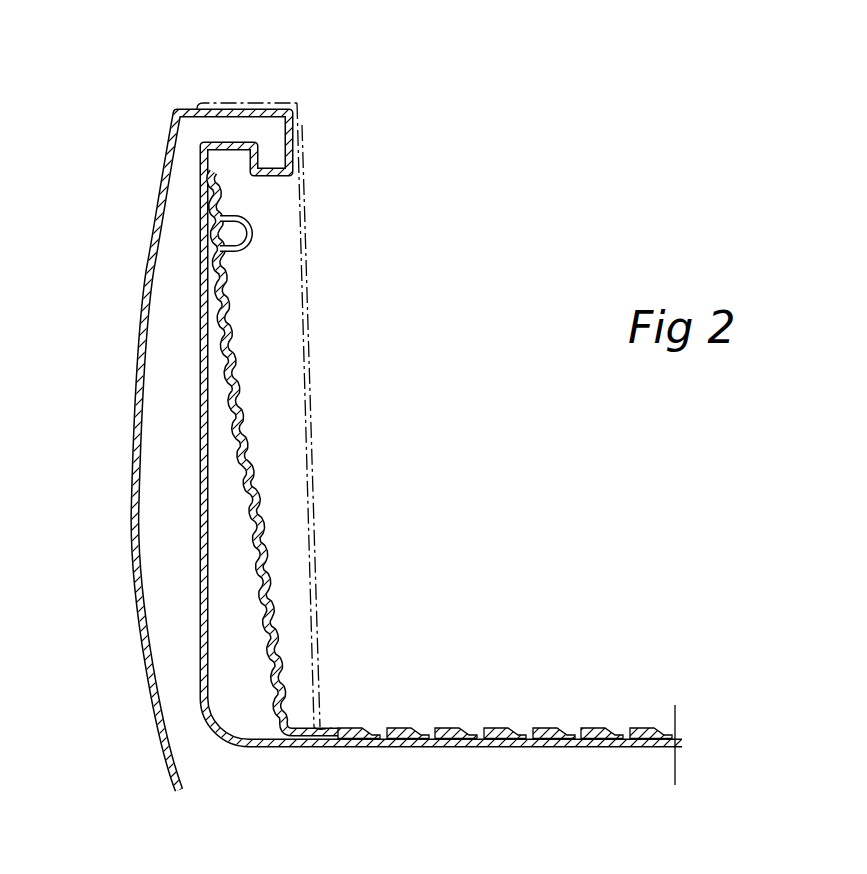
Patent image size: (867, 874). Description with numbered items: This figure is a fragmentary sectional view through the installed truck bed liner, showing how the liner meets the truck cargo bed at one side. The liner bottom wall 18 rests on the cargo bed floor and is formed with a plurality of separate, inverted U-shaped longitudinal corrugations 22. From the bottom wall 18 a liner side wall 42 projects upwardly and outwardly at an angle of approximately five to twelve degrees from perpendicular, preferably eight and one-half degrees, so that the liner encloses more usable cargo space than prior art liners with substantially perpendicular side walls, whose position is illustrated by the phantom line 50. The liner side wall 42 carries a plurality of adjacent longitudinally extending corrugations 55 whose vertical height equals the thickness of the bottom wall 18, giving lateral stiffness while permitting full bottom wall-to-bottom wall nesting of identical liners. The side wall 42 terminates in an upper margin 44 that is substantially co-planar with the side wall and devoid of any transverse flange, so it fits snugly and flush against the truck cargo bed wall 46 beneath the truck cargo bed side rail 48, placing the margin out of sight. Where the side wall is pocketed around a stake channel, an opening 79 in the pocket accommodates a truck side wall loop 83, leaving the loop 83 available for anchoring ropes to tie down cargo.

The liner bottom wall 18 is at (400, 728).
The longitudinal corrugations 22 is at (590, 728).
The liner side wall 42 is at (250, 488).
The upper margin 44 is at (218, 262).
The truck cargo bed wall 46 is at (200, 210).
The truck cargo bed side rail 48 is at (262, 108).
The phantom line 50 is at (305, 282).
The corrugations 55 is at (237, 400).
The opening 79 is at (223, 254).
The truck side wall loop 83 is at (254, 233).